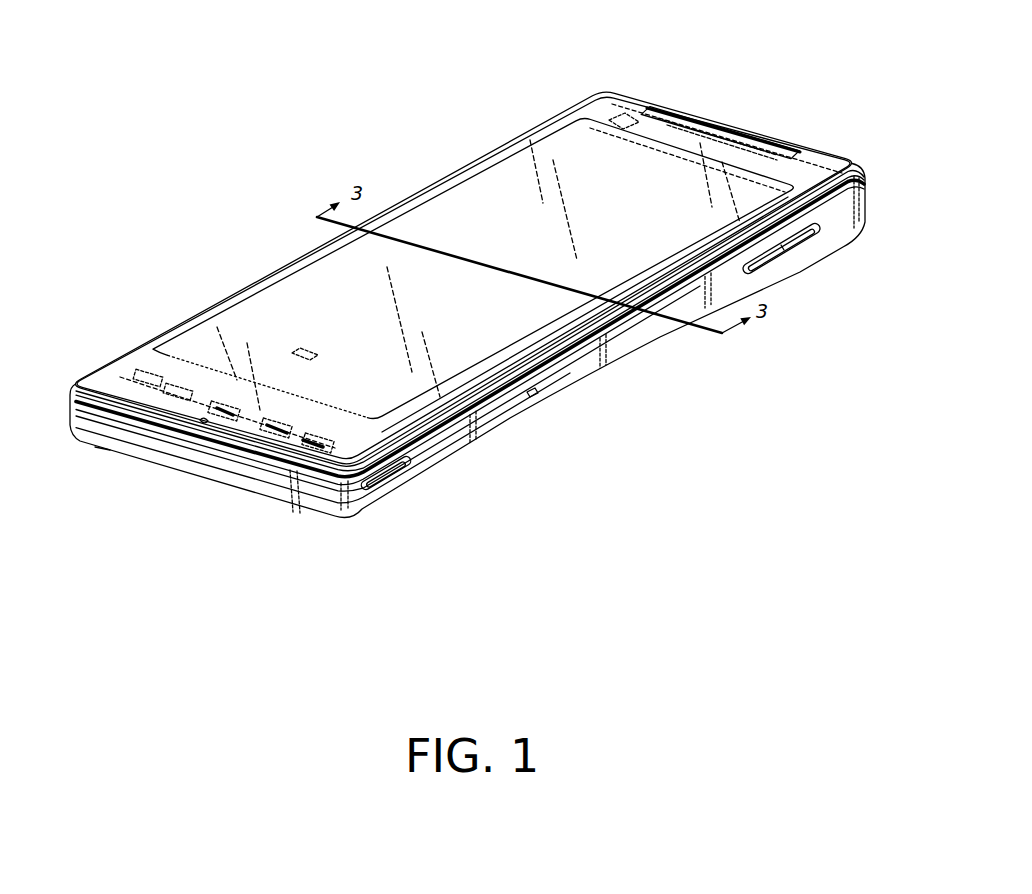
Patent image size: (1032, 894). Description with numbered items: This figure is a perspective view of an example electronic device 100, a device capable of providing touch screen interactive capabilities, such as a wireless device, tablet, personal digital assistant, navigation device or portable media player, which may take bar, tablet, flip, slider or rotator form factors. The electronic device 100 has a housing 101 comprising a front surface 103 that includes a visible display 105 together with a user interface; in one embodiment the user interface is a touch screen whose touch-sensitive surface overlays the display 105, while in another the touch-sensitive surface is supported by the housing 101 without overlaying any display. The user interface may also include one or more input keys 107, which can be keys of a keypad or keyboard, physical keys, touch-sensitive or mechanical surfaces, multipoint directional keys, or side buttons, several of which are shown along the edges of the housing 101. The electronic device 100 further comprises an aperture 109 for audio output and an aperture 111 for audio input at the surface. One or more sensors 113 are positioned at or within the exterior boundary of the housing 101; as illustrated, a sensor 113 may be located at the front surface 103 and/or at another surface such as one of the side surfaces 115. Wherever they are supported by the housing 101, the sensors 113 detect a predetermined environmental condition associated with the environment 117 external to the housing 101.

The electronic device 100 is at (823, 123).
The housing 101 is at (429, 186).
The front surface 103 is at (417, 440).
The display 105 is at (317, 255).
The input keys 107 is at (133, 380).
The aperture for audio output 109 is at (723, 128).
The aperture for audio input 111 is at (180, 447).
The sensors 113 is at (612, 98).
The side surfaces 115 is at (103, 447).
The environment 117 is at (290, 31).